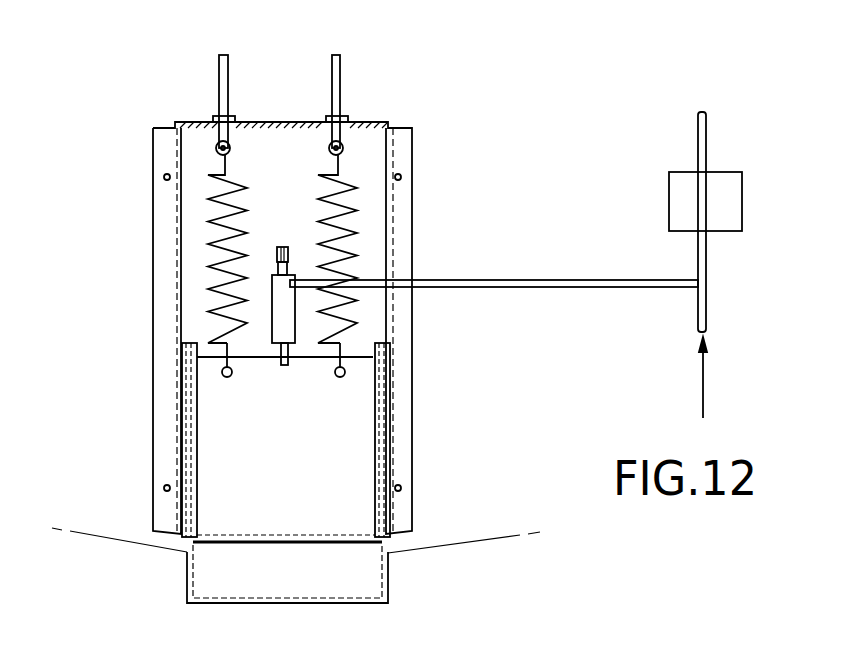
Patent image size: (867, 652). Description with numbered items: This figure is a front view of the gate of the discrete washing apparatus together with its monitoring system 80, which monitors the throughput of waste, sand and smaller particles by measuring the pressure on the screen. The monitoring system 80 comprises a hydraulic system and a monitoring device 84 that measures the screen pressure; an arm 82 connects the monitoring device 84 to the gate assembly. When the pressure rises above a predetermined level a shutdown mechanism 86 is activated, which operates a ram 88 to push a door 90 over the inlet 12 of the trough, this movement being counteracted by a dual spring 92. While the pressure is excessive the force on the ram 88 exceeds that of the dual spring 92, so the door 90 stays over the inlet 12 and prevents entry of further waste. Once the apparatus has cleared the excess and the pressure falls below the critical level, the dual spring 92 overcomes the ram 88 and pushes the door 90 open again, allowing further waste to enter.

The inlet 12 is at (329, 593).
The monitoring system 80 is at (173, 122).
The actuating arm 82 is at (588, 286).
The monitoring device 84 is at (742, 200).
The shutdown mechanism 86 is at (218, 370).
The ram 88 is at (283, 368).
The door 90 is at (298, 452).
The dual spring 92 is at (212, 244).